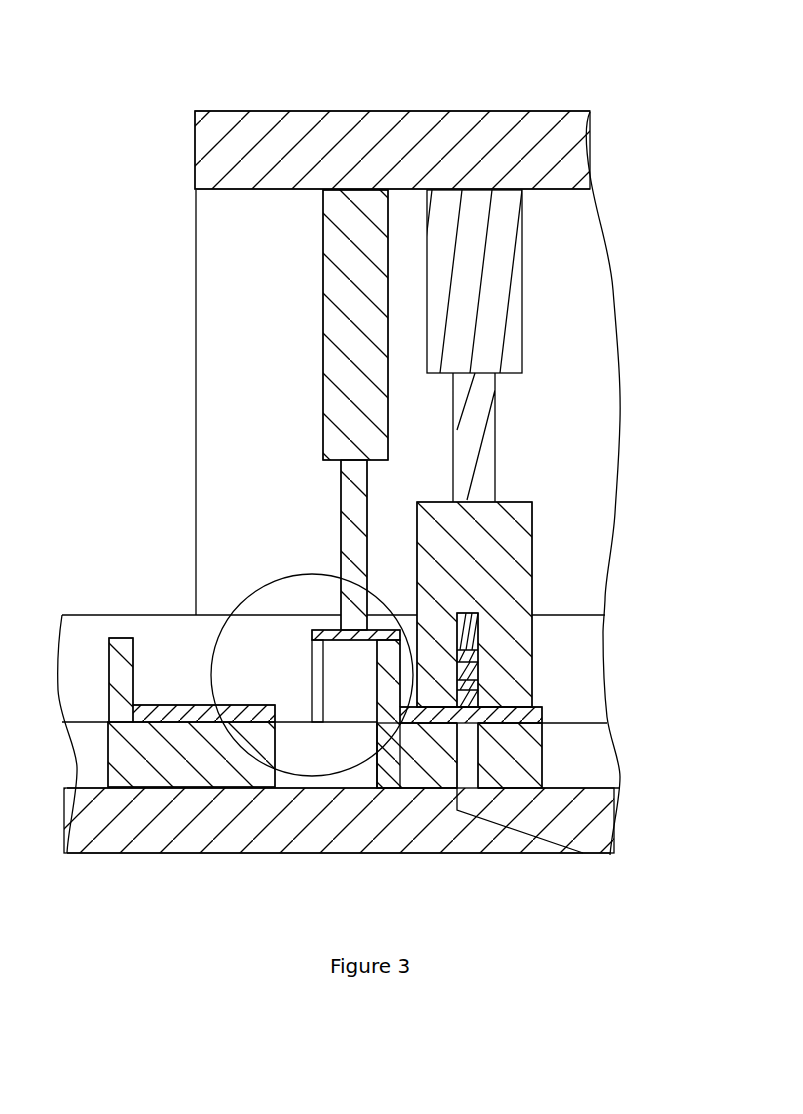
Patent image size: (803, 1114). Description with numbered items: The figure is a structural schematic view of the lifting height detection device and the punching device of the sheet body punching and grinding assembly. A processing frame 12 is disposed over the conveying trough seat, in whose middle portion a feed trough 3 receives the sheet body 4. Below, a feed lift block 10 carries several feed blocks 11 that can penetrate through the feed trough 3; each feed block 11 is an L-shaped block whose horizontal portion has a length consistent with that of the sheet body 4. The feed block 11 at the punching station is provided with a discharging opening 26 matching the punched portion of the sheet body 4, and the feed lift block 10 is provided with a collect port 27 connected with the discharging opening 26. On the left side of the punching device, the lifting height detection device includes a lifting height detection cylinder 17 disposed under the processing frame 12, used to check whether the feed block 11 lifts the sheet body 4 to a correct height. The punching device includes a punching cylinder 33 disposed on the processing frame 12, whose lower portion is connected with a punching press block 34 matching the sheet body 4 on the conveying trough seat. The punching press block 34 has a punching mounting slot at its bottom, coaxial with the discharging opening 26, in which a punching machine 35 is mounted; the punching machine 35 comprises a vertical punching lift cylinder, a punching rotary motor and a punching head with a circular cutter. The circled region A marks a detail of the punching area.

The feed trough 3 is at (577, 757).
The sheet body 4 is at (168, 715).
The feed lift block 10 is at (273, 820).
The feed block 11 is at (178, 757).
The processing frame 12 is at (395, 148).
The lifting height detection cylinder 17 is at (342, 415).
The discharging opening 26 is at (467, 733).
The collect port 27 is at (510, 820).
The punching cylinder 33 is at (495, 313).
The punching press block 34 is at (483, 557).
The punching machine 35 is at (483, 647).
The detail region A is at (242, 600).